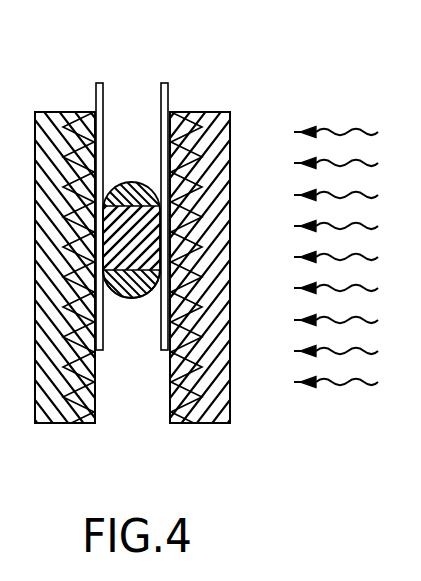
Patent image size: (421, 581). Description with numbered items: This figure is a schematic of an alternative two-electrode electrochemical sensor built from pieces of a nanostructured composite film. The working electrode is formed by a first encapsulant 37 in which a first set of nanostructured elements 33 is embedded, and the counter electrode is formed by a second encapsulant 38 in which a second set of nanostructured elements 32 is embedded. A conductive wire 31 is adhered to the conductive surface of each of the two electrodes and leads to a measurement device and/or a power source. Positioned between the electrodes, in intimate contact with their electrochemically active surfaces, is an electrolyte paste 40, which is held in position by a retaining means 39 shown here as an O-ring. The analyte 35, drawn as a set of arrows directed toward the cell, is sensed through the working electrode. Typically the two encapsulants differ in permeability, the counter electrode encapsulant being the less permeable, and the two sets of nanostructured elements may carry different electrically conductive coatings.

The conductive wire 31 is at (160, 95).
The second set of nanostructured elements 32 is at (57, 421).
The first set of nanostructured elements 33 is at (213, 418).
The analyte 35 is at (337, 224).
The first encapsulant 37 is at (210, 125).
The second encapsulant 38 is at (53, 130).
The retaining means 39 is at (127, 298).
The electrolyte paste 40 is at (138, 218).